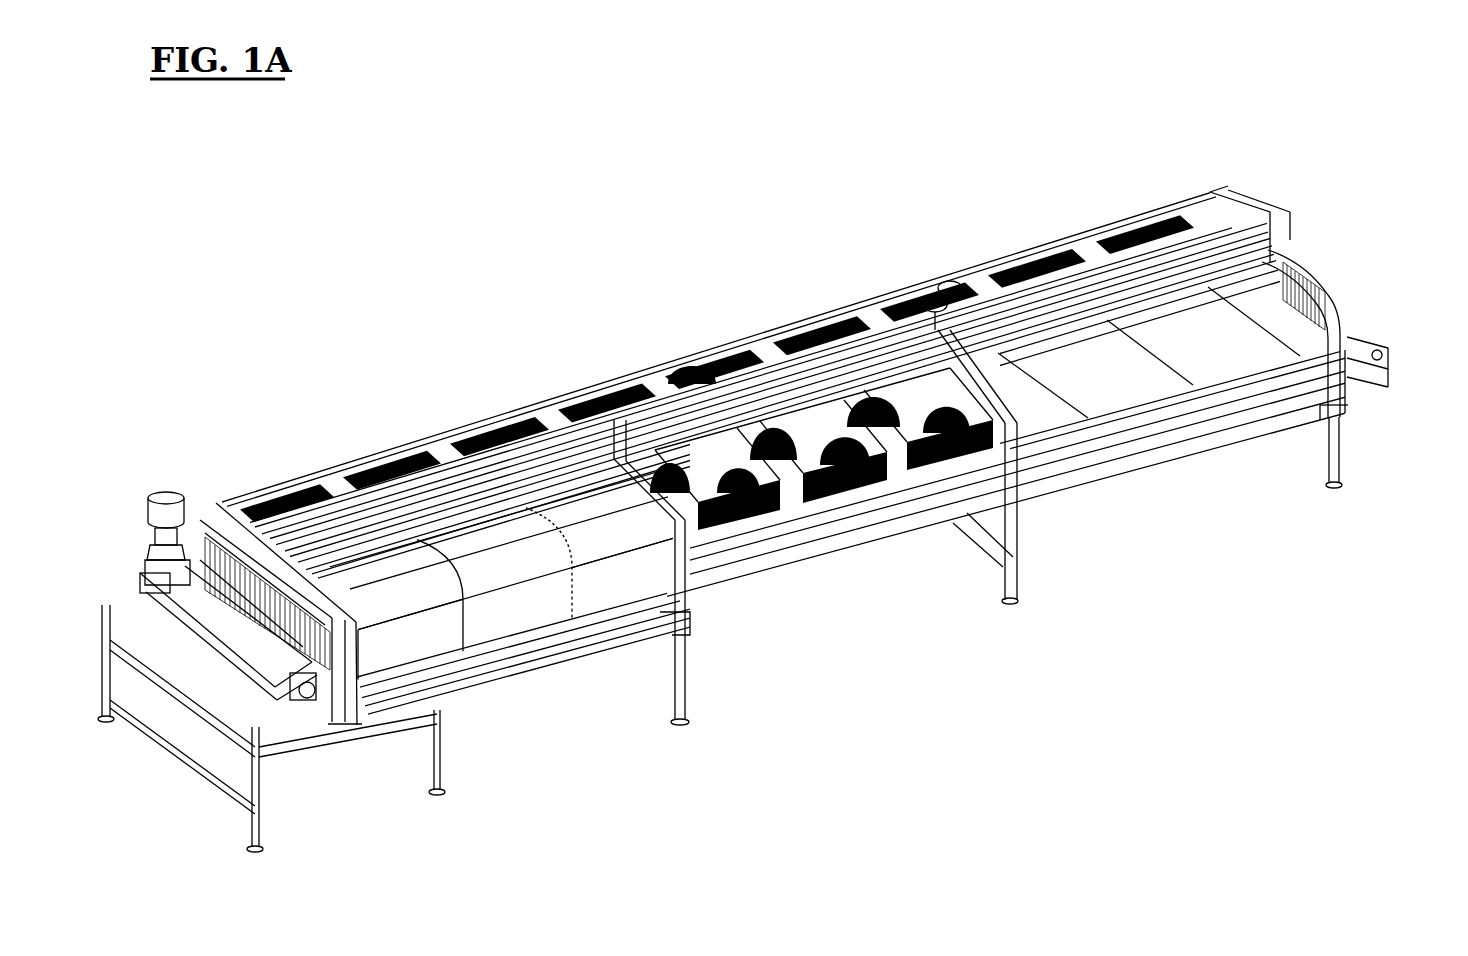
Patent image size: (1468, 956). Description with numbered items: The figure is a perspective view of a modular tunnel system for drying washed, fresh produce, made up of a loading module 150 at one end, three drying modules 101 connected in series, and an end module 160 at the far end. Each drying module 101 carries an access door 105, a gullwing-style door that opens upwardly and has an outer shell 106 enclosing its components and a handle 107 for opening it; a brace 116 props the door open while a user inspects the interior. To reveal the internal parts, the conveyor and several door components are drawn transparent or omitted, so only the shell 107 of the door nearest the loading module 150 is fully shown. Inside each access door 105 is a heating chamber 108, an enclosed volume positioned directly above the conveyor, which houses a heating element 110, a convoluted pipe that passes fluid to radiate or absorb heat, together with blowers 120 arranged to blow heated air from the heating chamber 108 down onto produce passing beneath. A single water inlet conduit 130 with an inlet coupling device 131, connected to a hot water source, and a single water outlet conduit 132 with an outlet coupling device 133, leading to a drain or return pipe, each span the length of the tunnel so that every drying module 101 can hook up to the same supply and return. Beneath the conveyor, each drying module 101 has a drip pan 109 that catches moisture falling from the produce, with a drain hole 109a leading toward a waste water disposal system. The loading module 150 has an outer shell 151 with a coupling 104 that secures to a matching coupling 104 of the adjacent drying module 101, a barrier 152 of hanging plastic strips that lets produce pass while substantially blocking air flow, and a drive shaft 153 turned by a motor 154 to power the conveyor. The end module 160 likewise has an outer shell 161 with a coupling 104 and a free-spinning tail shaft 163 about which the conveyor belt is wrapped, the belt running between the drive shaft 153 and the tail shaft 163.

The drying module 101 is at (868, 280).
The coupling 104 is at (660, 520).
The access door 105 is at (614, 590).
The outer shell 106 is at (445, 585).
The handle 107 is at (516, 655).
The heating chamber 108 is at (828, 423).
The drip pan 109 is at (1115, 395).
The drain hole 109a is at (1213, 413).
The heating element 110 is at (717, 523).
The brace 116 is at (323, 563).
The blower 120 is at (890, 428).
The water inlet conduit 130 is at (1282, 232).
The inlet coupling device 131 is at (920, 292).
The water outlet conduit 132 is at (1227, 192).
The outlet coupling device 133 is at (958, 290).
The loading module 150 is at (265, 618).
The outer shell 151 is at (213, 503).
The barrier 152 is at (303, 637).
The drive shaft 153 is at (193, 600).
The motor 154 is at (170, 493).
The end module 160 is at (1356, 376).
The outer shell 161 is at (1332, 282).
The tail shaft 163 is at (1383, 354).